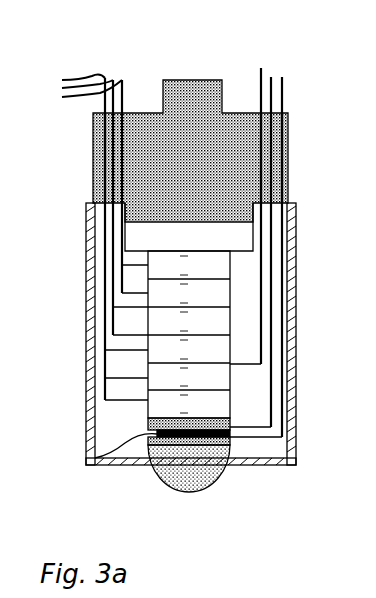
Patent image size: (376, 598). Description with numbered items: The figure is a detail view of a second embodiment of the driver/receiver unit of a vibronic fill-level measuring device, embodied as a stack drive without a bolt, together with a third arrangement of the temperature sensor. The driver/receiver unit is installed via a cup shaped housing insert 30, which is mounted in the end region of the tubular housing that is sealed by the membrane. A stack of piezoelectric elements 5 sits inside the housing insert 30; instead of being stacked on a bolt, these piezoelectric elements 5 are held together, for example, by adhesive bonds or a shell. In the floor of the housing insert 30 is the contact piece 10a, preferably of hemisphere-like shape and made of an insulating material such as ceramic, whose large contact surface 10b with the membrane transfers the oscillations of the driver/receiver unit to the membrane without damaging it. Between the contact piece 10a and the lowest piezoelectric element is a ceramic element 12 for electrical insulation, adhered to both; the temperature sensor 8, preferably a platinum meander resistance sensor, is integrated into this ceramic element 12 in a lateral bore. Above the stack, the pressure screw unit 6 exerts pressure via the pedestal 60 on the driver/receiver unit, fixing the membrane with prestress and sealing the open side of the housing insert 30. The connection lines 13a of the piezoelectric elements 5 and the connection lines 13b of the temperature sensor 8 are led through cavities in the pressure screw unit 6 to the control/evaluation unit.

The piezoelectric elements 5 is at (189, 334).
The pressure screw unit 6 is at (233, 156).
The temperature sensor 8 is at (228, 458).
The contact piece 10a is at (174, 473).
The contact surface 10b is at (183, 492).
The ceramic element 12 is at (86, 463).
The connection lines 13a is at (84, 235).
The connection lines 13b is at (283, 78).
The housing insert 30 is at (91, 372).
The pedestal 60 is at (238, 238).